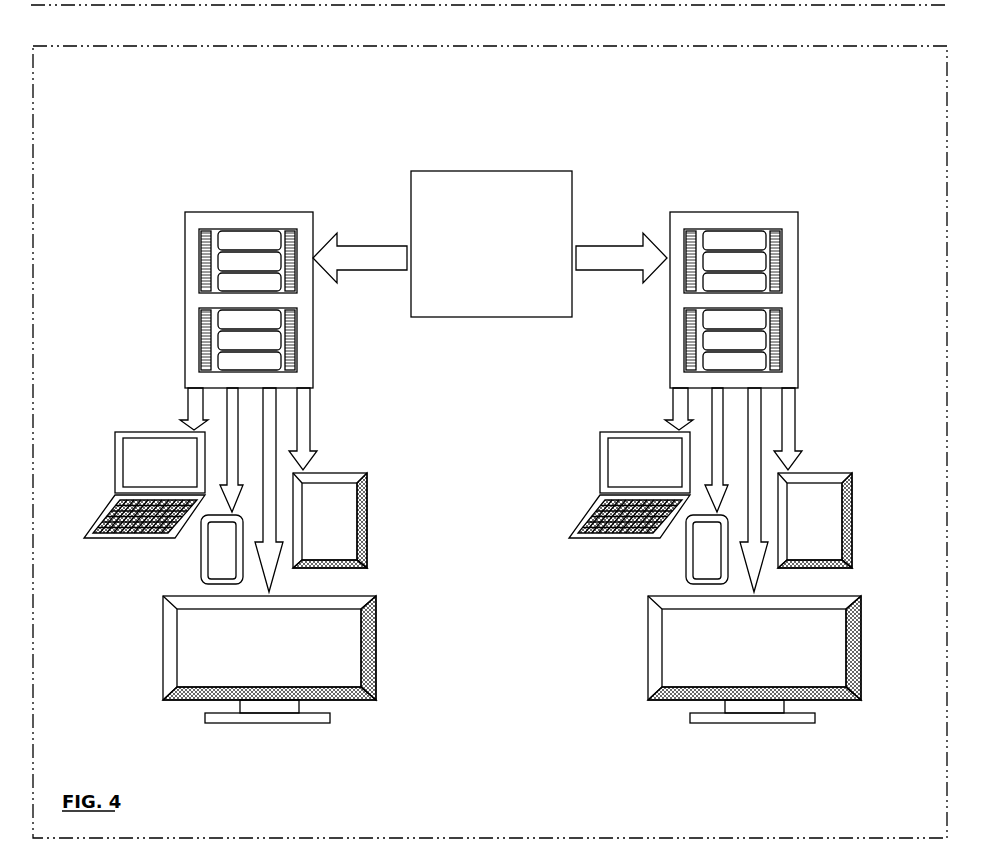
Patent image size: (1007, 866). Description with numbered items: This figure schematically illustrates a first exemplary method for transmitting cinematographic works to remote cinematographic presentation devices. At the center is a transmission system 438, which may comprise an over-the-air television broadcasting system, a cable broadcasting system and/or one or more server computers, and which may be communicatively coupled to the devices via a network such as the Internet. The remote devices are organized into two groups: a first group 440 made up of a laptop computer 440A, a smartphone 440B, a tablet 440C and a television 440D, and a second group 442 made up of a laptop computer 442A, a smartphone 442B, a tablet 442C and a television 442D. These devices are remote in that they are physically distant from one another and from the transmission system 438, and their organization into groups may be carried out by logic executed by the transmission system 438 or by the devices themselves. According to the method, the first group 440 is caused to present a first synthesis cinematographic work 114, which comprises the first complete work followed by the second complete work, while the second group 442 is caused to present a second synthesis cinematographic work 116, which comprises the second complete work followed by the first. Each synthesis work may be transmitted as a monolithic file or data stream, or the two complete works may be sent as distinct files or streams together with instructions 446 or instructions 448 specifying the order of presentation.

The first synthesis cinematographic work 114 is at (239, 271).
The instructions 446 is at (239, 271).
The second synthesis cinematographic work 116 is at (764, 271).
The instructions 448 is at (764, 271).
The transmission system 438 is at (476, 268).
The first group of remote cinematographic presentation devices 440 is at (363, 390).
The laptop computer 440A is at (181, 468).
The smartphone 440B is at (200, 555).
The tablet 440C is at (354, 530).
The television 440D is at (296, 658).
The second group of remote cinematographic presentation devices 442 is at (588, 390).
The laptop computer 442A is at (666, 468).
The smartphone 442B is at (685, 556).
The tablet 442C is at (839, 530).
The television 442D is at (781, 658).